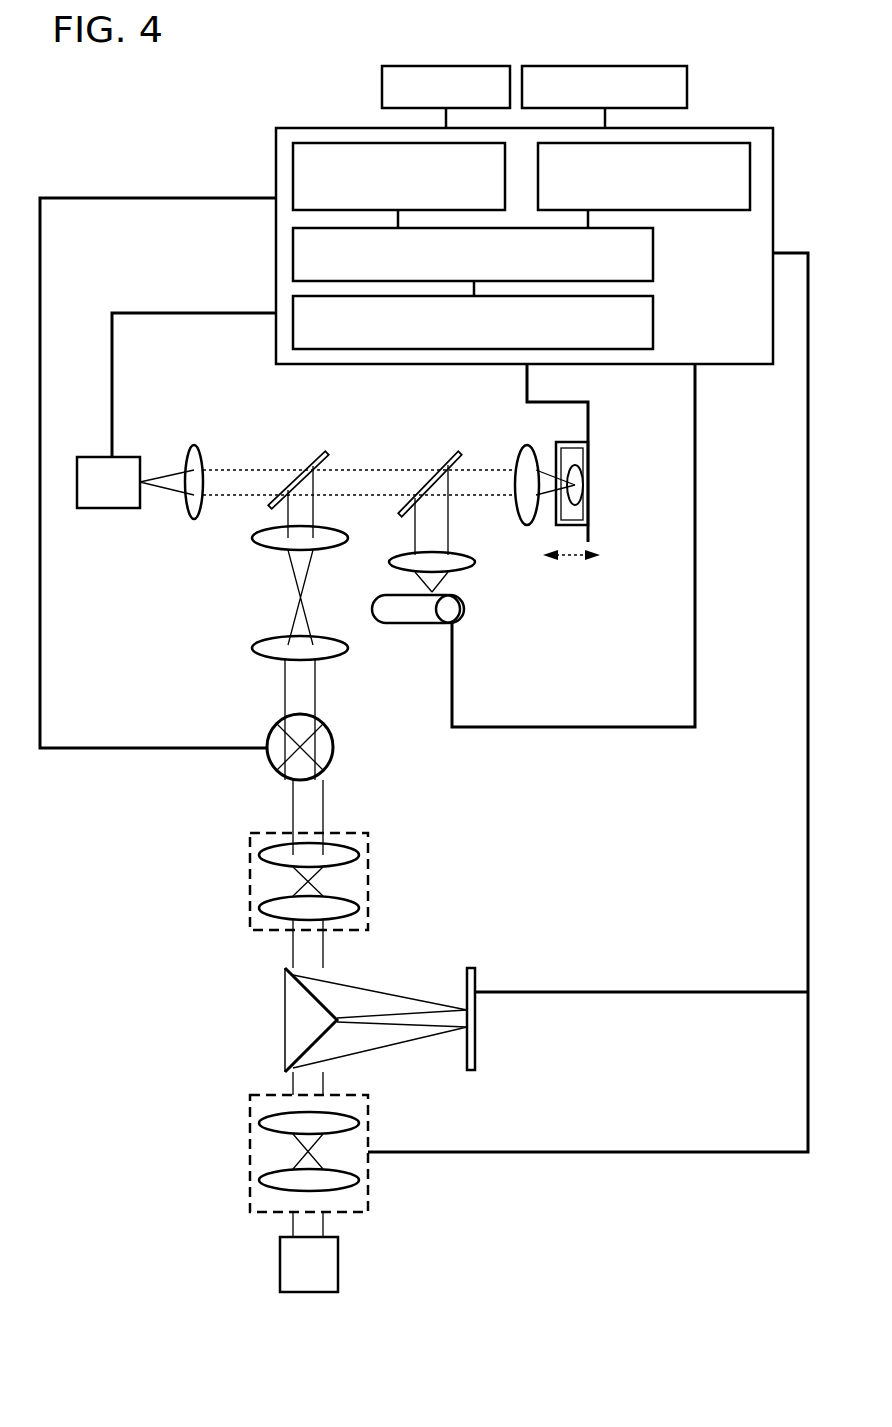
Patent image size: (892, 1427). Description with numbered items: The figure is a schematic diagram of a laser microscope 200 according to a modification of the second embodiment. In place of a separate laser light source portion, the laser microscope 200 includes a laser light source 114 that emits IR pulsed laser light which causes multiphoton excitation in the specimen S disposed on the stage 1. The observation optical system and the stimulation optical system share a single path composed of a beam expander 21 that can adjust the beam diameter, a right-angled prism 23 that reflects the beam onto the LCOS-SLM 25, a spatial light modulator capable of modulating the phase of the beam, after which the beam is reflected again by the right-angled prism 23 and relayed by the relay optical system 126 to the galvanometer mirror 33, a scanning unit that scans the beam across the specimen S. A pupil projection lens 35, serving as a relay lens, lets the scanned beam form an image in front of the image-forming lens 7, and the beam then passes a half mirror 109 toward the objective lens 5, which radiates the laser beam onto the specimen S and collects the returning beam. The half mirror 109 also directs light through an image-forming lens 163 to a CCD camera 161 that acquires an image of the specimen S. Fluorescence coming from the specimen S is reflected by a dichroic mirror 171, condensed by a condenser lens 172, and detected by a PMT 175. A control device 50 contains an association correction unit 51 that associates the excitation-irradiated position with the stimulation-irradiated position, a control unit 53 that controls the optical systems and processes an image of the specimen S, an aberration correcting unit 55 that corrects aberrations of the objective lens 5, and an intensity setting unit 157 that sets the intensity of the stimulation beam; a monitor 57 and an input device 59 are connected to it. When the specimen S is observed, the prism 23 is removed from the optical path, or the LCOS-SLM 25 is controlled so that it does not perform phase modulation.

The stage 1 is at (590, 530).
The specimen S is at (588, 487).
The objective lens 5 is at (520, 447).
The image-forming lens 7 is at (252, 537).
The beam expander 21 is at (250, 1155).
The right-angled prism 23 is at (283, 1020).
The LCOS-SLM 25 is at (477, 1058).
The galvanometer mirror 33 is at (268, 732).
The pupil projection lens 35 is at (252, 648).
The control device 50 is at (276, 168).
The association correction unit 51 is at (343, 143).
The control unit 53 is at (653, 253).
The aberration correcting unit 55 is at (653, 318).
The monitor 57 is at (441, 66).
The input device 59 is at (603, 66).
The half mirror 109 is at (313, 455).
The laser light source 114 is at (280, 1265).
The relay optical system 126 is at (250, 880).
The intensity setting unit 157 is at (711, 143).
The CCD camera 161 is at (90, 457).
The image-forming lens 163 is at (193, 445).
The dichroic mirror 171 is at (445, 455).
The condenser lens 172 is at (475, 562).
The PMT 175 is at (462, 612).
The laser microscope 200 is at (652, 1216).